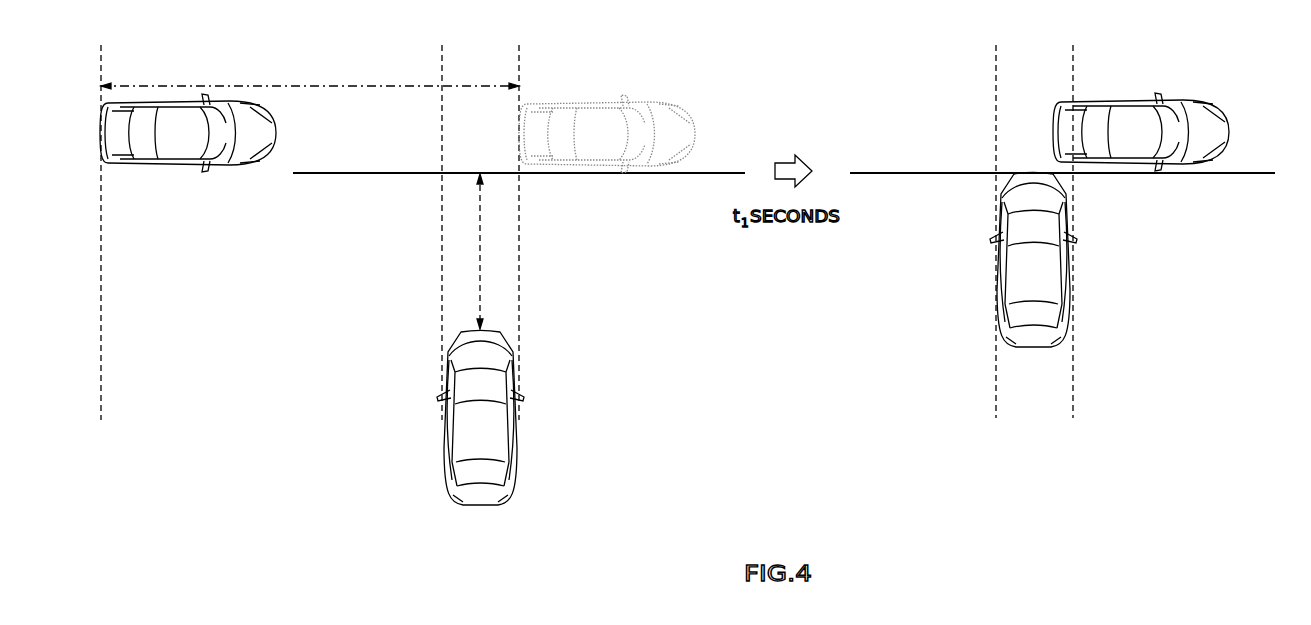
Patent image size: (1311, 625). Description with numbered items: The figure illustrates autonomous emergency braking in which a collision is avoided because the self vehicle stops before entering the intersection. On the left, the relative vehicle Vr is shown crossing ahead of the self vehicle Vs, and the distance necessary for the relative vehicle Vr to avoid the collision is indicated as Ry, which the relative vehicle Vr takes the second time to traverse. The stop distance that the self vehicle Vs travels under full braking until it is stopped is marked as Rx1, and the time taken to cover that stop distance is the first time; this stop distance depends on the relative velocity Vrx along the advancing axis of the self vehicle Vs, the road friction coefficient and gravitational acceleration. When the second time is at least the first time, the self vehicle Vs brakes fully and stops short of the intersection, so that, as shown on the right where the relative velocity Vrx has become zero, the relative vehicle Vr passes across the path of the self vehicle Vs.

The relative vehicle Vr is at (243, 97).
The self vehicle Vs is at (518, 453).
The distance necessary for the relative vehicle to avoid the collision Ry is at (310, 72).
The stop distance Rx1 is at (525, 251).
The relative velocity Vrx is at (1134, 218).